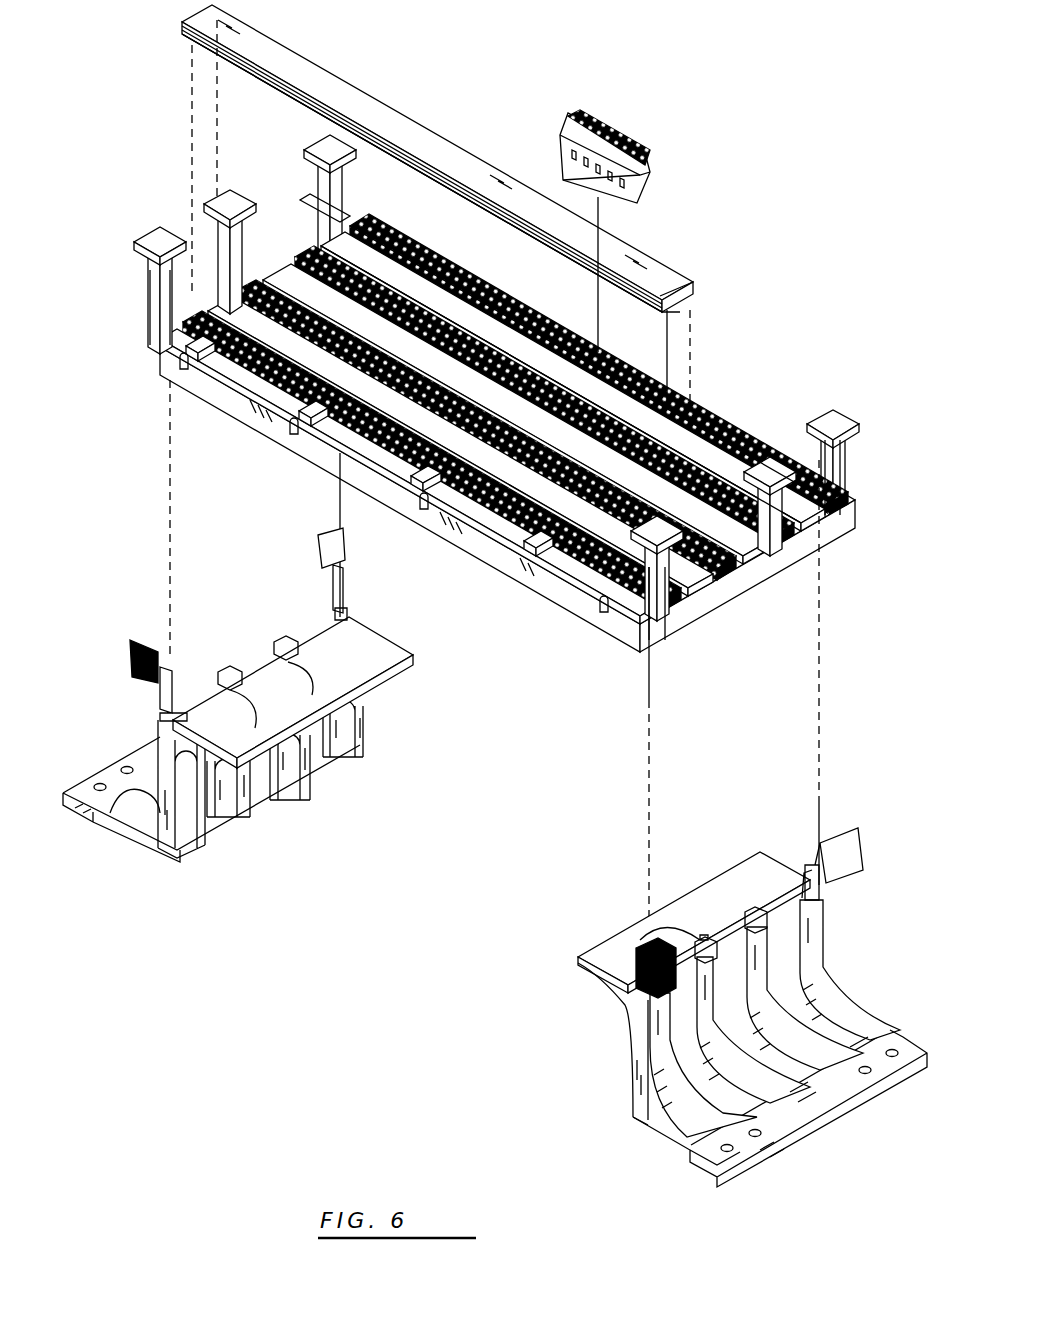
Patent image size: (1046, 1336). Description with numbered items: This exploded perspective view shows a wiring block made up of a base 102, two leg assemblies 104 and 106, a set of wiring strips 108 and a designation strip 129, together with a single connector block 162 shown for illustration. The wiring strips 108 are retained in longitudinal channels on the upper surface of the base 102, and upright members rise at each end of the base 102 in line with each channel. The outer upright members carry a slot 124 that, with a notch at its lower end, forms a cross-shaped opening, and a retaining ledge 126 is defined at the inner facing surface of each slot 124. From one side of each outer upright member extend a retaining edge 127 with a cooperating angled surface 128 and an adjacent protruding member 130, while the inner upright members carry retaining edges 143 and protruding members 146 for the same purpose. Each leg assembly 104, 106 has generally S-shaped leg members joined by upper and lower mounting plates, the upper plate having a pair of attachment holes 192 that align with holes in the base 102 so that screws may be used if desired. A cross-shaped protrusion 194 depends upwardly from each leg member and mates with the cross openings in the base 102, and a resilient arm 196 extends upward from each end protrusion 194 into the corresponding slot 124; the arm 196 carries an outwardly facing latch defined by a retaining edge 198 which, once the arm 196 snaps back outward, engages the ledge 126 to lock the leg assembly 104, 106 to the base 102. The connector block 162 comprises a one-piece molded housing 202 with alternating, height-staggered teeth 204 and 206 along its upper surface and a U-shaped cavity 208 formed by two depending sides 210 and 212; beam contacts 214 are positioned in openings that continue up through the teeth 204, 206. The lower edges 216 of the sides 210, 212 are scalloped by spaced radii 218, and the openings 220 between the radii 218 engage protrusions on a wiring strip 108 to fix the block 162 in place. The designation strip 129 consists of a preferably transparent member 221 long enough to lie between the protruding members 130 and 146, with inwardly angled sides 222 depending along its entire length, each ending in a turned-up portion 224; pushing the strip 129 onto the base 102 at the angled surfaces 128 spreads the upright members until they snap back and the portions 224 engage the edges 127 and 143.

The base 102 is at (507, 434).
The leg assembly 104 is at (630, 1052).
The leg assembly 106 is at (481, 836).
The wiring strips 108 is at (728, 432).
The slot 124 is at (830, 525).
The retaining ledge 126 is at (830, 492).
The retaining edge 127 is at (372, 224).
The angled surface 128 is at (348, 205).
The designation strip 129 is at (362, 78).
The protruding member 130 is at (322, 195).
The retaining edges 143 is at (210, 278).
The protruding member 146 is at (262, 232).
The connector block 162 is at (652, 180).
The attachment holes 192 is at (372, 668).
The cross shaped protrusion 194 is at (238, 655).
The resilient arm 196 is at (346, 605).
The retaining edge 198 is at (348, 582).
The housing 202 is at (558, 135).
The teeth 204 is at (588, 115).
The teeth 206 is at (612, 120).
The U-shaped cavity 208 is at (632, 208).
The depending side 210 is at (642, 197).
The depending side 212 is at (565, 180).
The beam contacts 214 is at (640, 222).
The lower edges 216 is at (562, 152).
The radii 218 is at (635, 238).
The opening 220 is at (640, 250).
The transparent member 221 is at (280, 46).
The inwardly angled sides 222 is at (692, 314).
The turned up portion 224 is at (560, 262).